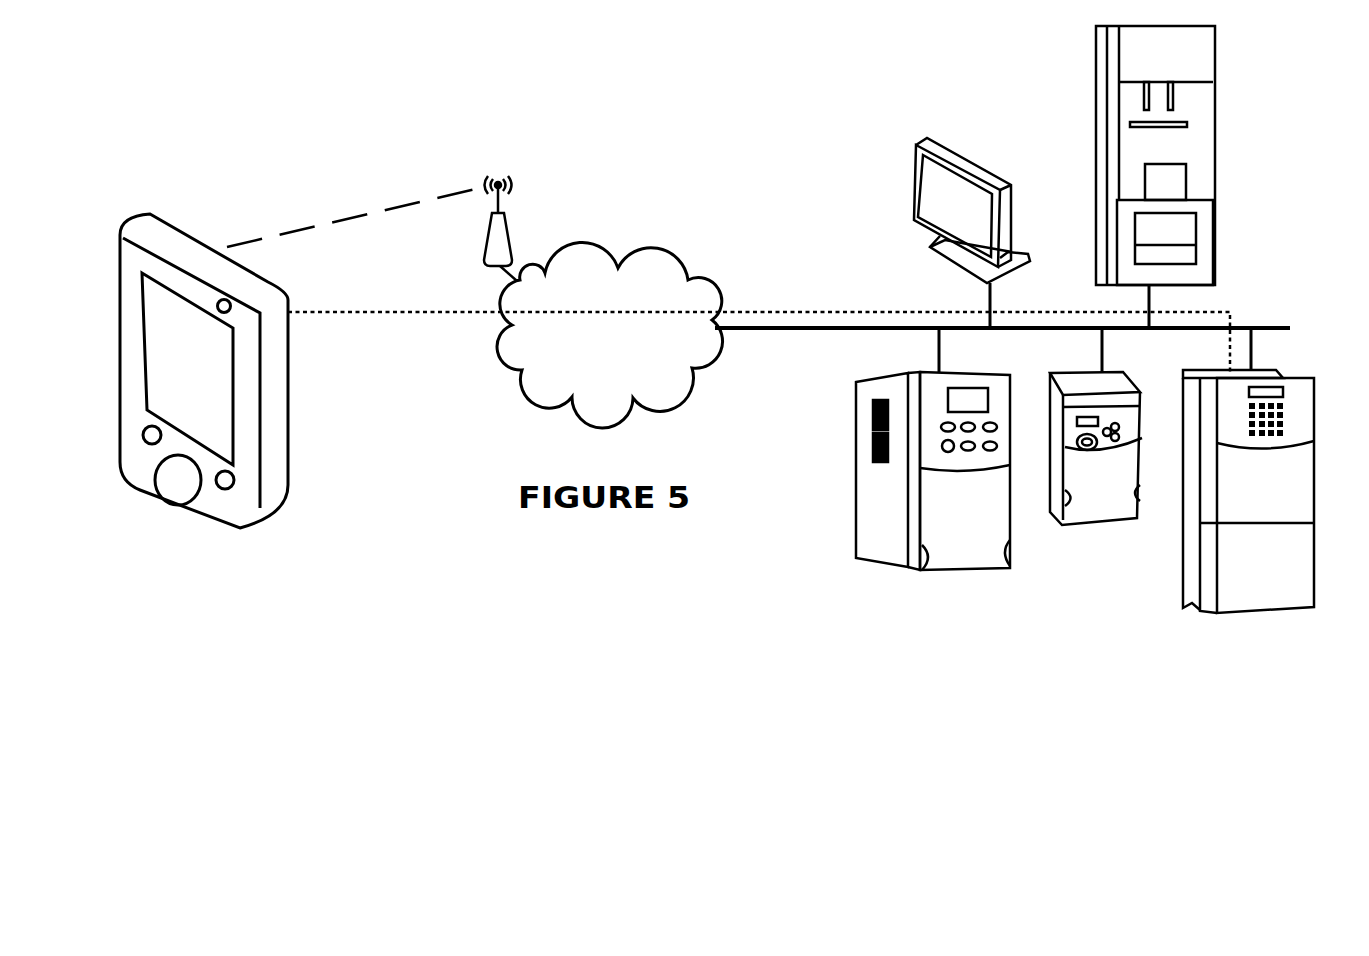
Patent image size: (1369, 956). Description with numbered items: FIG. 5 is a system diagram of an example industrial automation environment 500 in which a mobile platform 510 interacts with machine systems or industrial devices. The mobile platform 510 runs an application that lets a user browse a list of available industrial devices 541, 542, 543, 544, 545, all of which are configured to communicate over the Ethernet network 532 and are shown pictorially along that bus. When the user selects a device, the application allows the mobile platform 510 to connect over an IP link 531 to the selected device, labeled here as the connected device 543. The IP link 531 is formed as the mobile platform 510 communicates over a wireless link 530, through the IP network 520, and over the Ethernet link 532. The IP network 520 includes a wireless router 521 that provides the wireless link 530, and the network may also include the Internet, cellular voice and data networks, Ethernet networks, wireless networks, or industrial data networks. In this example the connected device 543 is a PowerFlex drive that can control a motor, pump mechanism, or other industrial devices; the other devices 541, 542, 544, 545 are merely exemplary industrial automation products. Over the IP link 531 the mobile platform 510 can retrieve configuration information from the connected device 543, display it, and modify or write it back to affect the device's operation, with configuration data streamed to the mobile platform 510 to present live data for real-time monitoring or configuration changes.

The industrial automation environment 500 is at (224, 87).
The mobile platform 510 is at (147, 495).
The IP network 520 is at (610, 335).
The wireless router 521 is at (512, 240).
The wireless link 530 is at (377, 213).
The IP link 531 is at (395, 308).
The Ethernet link 532 is at (835, 331).
The industrial device 541 is at (878, 565).
The industrial device 542 is at (1110, 525).
The connected device 543 is at (1241, 543).
The industrial device 544 is at (988, 167).
The industrial device 545 is at (1216, 257).